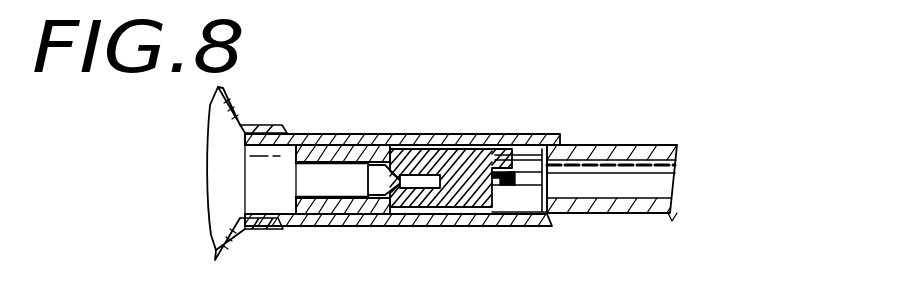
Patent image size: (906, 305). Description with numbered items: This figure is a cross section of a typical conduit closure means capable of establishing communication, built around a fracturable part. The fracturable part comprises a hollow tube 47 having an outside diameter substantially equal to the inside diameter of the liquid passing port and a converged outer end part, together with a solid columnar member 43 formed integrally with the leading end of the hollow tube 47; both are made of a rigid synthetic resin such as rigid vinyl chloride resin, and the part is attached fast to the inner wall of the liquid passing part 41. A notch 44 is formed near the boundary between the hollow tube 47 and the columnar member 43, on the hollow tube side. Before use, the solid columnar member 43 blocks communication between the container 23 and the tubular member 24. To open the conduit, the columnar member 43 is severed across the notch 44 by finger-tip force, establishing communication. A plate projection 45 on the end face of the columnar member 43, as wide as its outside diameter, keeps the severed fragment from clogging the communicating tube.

The container 23 is at (226, 171).
The tubular member 24 is at (627, 144).
The liquid passing part 41 is at (322, 216).
The solid columnar member 43 is at (480, 170).
The notch 44 is at (423, 134).
The plate projection 45 is at (518, 174).
The hollow tube 47 is at (320, 150).